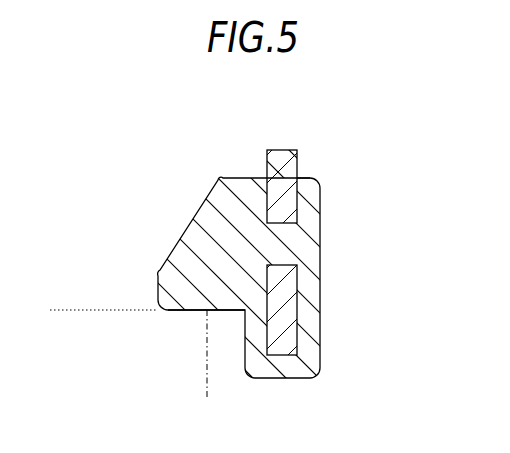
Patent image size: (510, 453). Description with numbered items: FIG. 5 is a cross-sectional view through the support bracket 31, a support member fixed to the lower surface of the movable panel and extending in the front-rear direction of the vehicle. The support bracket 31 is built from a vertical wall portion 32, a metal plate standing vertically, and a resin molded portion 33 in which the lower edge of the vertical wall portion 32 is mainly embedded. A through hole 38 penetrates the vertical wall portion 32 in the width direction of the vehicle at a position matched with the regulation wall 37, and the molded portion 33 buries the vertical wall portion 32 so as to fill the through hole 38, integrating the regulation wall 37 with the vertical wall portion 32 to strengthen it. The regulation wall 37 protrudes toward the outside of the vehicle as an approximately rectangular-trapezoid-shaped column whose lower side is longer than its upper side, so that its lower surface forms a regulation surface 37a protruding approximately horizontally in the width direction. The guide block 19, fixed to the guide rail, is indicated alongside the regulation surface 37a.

The guide block 19 is at (73, 309).
The support bracket 31 is at (255, 271).
The vertical wall portion 32 is at (287, 150).
The molded portion 33 is at (289, 369).
The regulation wall 37 is at (255, 260).
The regulation surface 37a is at (188, 311).
The through hole 38 is at (292, 228).